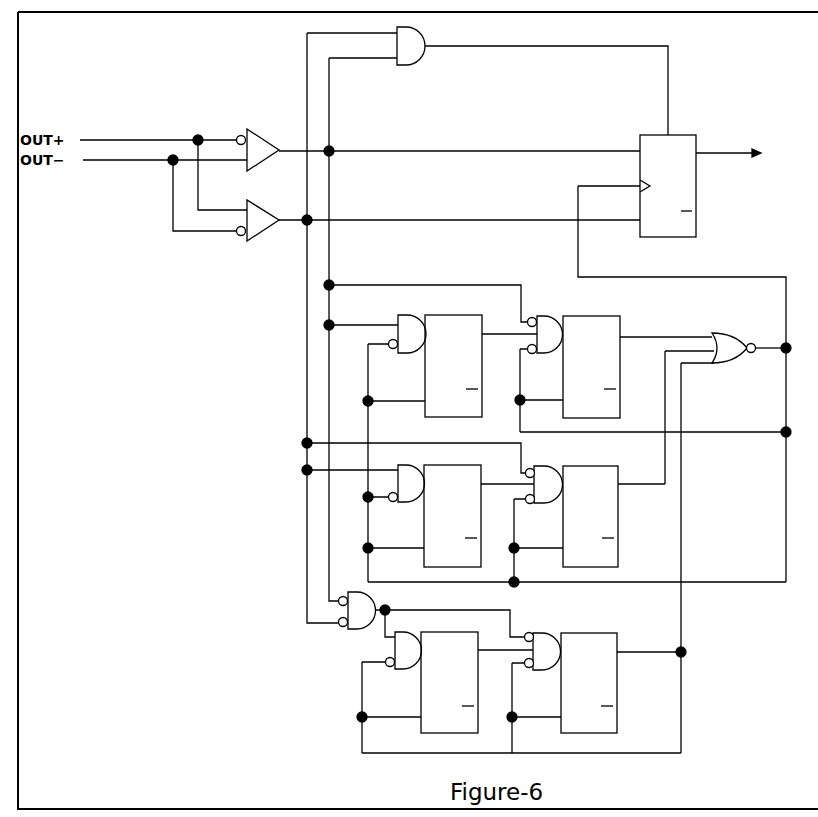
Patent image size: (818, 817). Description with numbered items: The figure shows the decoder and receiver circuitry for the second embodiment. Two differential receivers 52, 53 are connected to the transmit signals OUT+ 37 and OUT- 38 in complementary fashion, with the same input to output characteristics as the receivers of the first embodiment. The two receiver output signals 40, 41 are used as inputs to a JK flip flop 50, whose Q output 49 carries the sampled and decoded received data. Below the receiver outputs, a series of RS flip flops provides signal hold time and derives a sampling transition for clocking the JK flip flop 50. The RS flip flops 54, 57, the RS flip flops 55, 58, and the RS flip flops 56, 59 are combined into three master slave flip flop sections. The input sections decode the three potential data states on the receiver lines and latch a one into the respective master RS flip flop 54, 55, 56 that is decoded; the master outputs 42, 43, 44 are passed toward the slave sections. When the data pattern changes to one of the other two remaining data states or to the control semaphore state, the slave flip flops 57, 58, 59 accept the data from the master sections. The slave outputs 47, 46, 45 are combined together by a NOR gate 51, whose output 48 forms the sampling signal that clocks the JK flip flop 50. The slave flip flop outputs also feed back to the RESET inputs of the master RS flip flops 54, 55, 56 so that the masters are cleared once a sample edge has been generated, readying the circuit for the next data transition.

The OUT+ transmit signal 37 is at (163, 154).
The OUT- transmit signal 38 is at (165, 192).
The output of inverting buffer 52 40 is at (459, 138).
The output of inverting buffer 53 41 is at (459, 208).
The Q output of latch 54 42 is at (509, 321).
The Q output of latch 55 43 is at (507, 471).
The Q output of latch 56 44 is at (505, 637).
The Q output of latch 59 45 is at (649, 666).
The Q output of latch 58 46 is at (642, 497).
The Q output of latch 57 47 is at (666, 353).
The output of NOR gate 51 48 is at (770, 336).
The Q[0] output of flip-flop 50 49 is at (746, 140).
The JK flip flop 50 is at (665, 171).
The NOR gate 51 is at (734, 361).
The differential input buffer 52 is at (258, 140).
The differential input buffer 53 is at (258, 233).
The RS flip flop 54 is at (405, 448).
The RS flip flop 55 is at (394, 516).
The RS flip flop 56 is at (417, 692).
The RS flip flop 57 is at (474, 358).
The RS flip flop 58 is at (462, 515).
The RS flip flop 59 is at (562, 693).